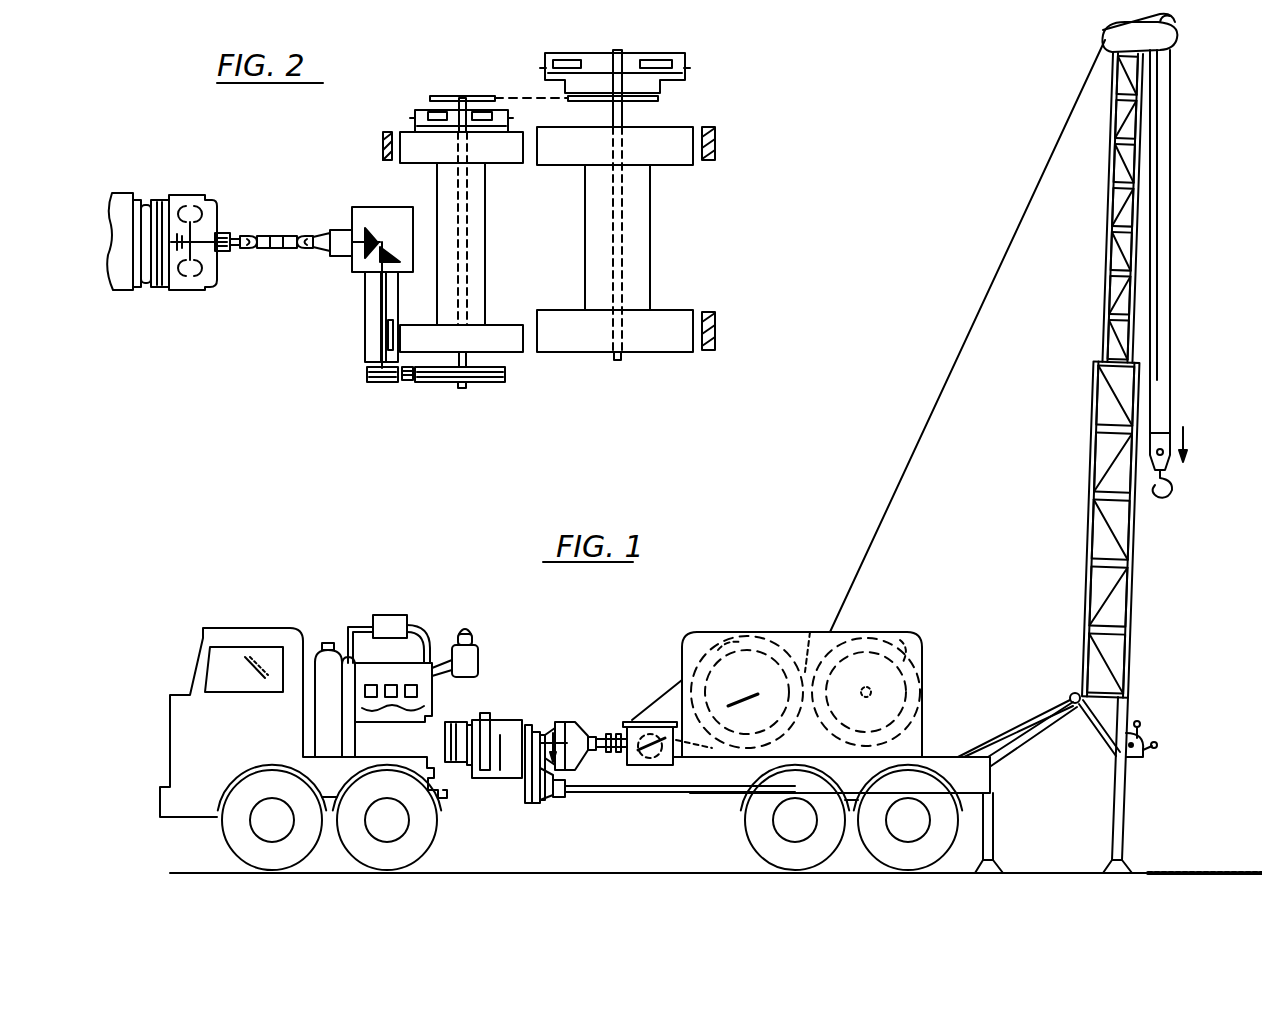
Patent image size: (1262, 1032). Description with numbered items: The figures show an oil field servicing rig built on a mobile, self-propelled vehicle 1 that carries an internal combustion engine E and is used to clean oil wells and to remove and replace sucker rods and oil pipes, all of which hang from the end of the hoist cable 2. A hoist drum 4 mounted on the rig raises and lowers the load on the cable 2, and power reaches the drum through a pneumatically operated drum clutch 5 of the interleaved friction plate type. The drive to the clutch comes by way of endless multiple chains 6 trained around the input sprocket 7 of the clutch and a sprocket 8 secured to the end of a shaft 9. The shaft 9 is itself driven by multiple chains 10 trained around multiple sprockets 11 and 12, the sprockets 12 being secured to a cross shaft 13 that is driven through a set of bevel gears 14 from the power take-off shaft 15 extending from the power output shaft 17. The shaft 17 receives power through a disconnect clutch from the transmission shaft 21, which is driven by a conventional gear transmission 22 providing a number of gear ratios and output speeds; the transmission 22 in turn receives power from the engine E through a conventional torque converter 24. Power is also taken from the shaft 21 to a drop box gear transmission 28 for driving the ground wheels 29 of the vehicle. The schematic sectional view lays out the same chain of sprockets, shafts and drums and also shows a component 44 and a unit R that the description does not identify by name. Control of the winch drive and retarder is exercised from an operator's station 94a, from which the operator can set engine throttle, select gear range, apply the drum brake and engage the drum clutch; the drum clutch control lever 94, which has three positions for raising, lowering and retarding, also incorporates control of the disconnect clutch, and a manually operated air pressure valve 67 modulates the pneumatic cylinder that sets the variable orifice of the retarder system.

In FIG. 1, the mobile self-propelled vehicle 1 is at (310, 612).
In FIG. 1, the hoist cable 2 is at (1172, 297).
In FIG. 2, the hoist drum 4 is at (652, 213).
In FIG. 1, the hoist drum 4 is at (925, 670).
In FIG. 2, the drum clutch 5 is at (676, 58).
In FIG. 1, the drum clutch 5 is at (912, 638).
In FIG. 2, the endless multiple chains 6 is at (516, 94).
In FIG. 1, the endless multiple chains 6 is at (812, 632).
In FIG. 2, the input sprocket 7 is at (660, 99).
In FIG. 2, the sprocket 8 is at (440, 94).
In FIG. 2, the shaft 9 is at (468, 212).
In FIG. 1, the shaft 9 is at (758, 655).
In FIG. 2, the multiple chains 10 is at (408, 384).
In FIG. 1, the multiple chains 10 is at (696, 757).
In FIG. 2, the multiple sprockets 11 is at (492, 385).
In FIG. 1, the multiple sprockets 11 is at (740, 650).
In FIG. 2, the sprockets 12 is at (367, 385).
In FIG. 1, the sprockets 12 is at (645, 768).
In FIG. 2, the cross shaft 13 is at (368, 311).
In FIG. 2, the bevel gears 14 is at (385, 252).
In FIG. 2, the power take-off shaft 15 is at (279, 236).
In FIG. 1, the power take-off shaft 15 is at (606, 735).
In FIG. 2, the power output shaft 17 is at (222, 233).
In FIG. 1, the transmission shaft 21 is at (547, 751).
In FIG. 2, the gear transmission 22 is at (128, 292).
In FIG. 1, the gear transmission 22 is at (487, 772).
In FIG. 1, the torque converter 24 is at (446, 722).
In FIG. 1, the drop box gear transmission 28 is at (540, 802).
In FIG. 1, the ground wheels 29 is at (872, 862).
In FIG. 1, the hydraulic motor 44 is at (561, 722).
In FIG. 1, the air pressure valve 67 is at (1142, 726).
In FIG. 1, the drum clutch control lever 94 is at (1158, 746).
In FIG. 1, the operator's station 94a is at (1180, 873).
In FIG. 2, the motor R is at (205, 195).
In FIG. 1, the motor R is at (568, 721).
In FIG. 1, the internal combustion engine E is at (392, 746).